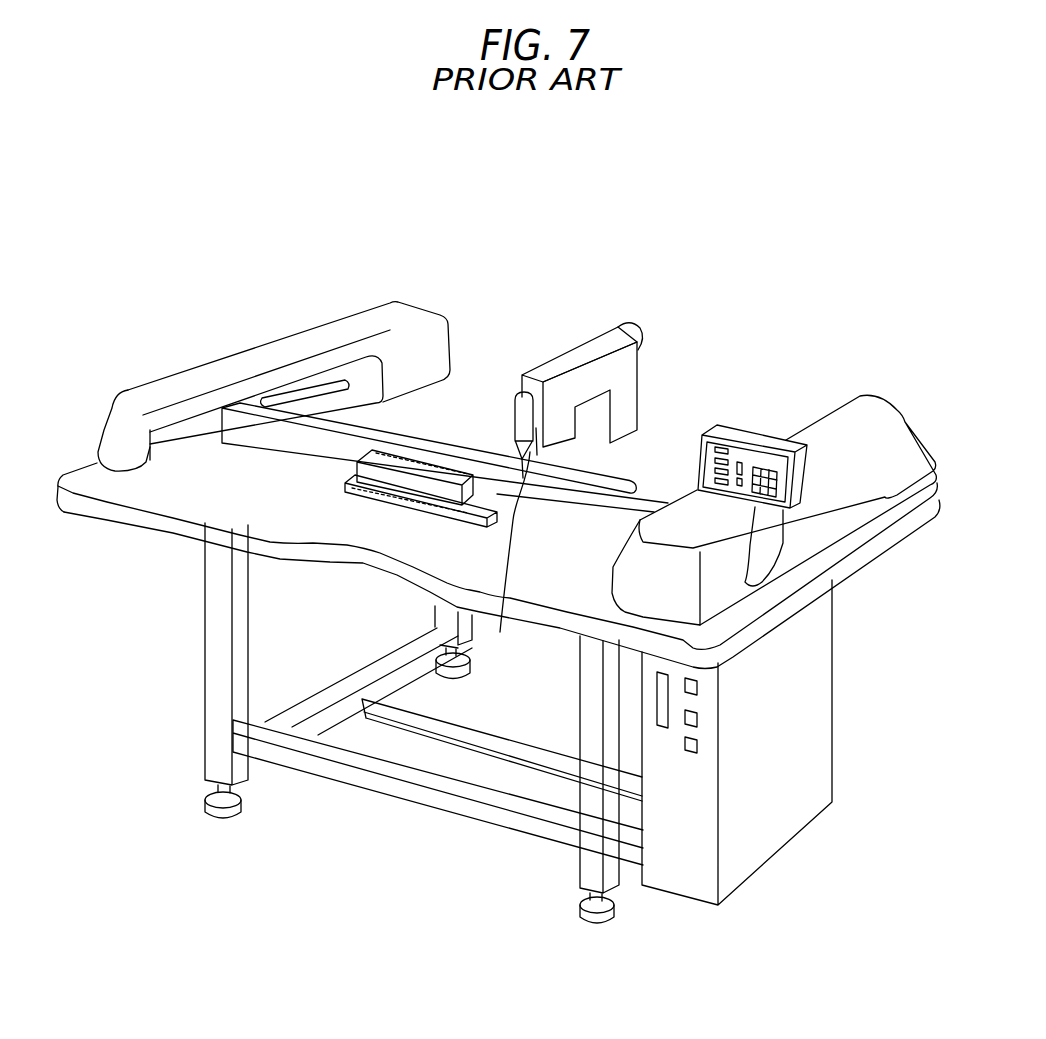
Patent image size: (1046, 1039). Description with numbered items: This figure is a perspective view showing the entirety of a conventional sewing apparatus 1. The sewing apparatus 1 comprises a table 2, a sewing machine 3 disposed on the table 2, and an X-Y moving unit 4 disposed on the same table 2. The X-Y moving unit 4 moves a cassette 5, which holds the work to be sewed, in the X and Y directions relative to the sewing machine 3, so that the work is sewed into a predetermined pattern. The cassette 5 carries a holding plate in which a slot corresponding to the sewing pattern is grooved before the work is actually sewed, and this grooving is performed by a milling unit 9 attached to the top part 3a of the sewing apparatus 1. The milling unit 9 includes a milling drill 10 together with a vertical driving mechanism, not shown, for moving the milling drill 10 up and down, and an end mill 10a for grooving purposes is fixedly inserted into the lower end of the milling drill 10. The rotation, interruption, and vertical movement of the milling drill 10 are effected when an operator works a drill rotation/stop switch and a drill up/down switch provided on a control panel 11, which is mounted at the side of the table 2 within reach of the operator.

The sewing apparatus 1 is at (705, 352).
The table 2 is at (870, 553).
The sewing machine 3 is at (557, 357).
The top part 3a is at (545, 397).
The X-Y moving unit 4 is at (605, 481).
The cassette 5 is at (388, 508).
The milling unit 9 is at (512, 411).
The milling drill 10 is at (517, 433).
The end mill 10a is at (507, 559).
The control panel 11 is at (738, 452).